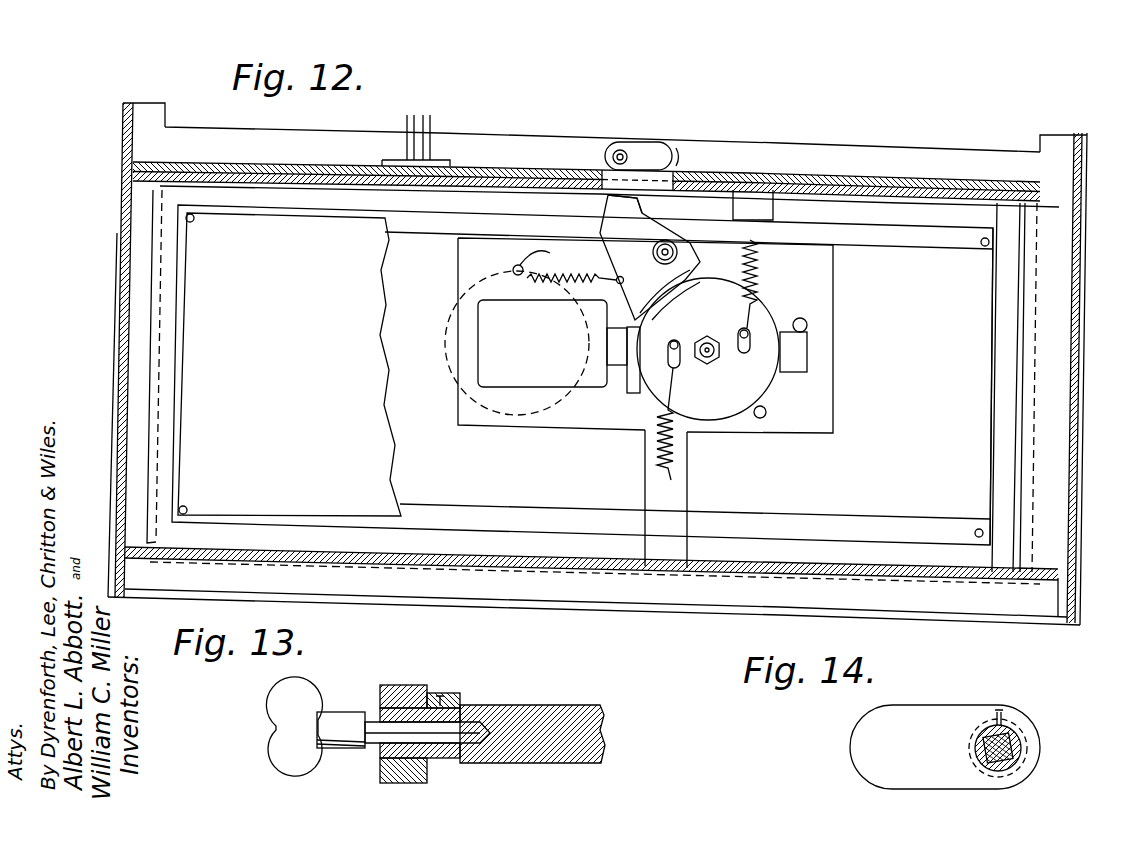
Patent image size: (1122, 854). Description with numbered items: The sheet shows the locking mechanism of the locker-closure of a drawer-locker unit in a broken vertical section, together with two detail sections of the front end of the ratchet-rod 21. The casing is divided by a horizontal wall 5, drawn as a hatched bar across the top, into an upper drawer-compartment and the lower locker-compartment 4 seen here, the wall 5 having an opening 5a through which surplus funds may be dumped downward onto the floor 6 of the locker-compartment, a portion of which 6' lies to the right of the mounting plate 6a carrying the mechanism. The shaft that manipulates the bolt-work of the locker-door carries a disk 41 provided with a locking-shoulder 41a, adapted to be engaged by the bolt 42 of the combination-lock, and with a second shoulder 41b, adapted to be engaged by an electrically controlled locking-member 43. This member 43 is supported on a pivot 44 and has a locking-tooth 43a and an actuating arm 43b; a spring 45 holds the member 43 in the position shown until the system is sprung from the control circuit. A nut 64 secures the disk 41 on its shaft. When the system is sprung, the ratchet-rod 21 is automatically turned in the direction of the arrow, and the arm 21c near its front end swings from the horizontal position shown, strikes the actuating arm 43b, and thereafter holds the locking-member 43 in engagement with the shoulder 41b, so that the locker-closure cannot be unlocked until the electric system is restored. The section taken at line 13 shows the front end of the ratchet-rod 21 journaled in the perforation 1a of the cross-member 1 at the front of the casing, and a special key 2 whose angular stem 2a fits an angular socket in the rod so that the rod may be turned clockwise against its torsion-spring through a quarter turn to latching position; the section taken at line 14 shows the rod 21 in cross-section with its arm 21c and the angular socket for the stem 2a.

In FIG. 13, the cross-member 1 is at (380, 688).
In FIG. 13, the perforation 1a is at (380, 772).
In FIG. 13, the special key 2 is at (277, 702).
In FIG. 13, the angular stem 2a is at (472, 738).
In FIG. 14, the angular stem 2a is at (1003, 770).
In FIG. 12, the locker-compartment 4 is at (128, 337).
In FIG. 12, the horizontal wall 5 is at (935, 185).
In FIG. 12, the opening 5a is at (122, 236).
In FIG. 12, the floor of the locker-compartment 6 is at (558, 396).
In FIG. 12, the panel portion 6' is at (942, 386).
In FIG. 12, the mounting plate 6a is at (490, 337).
In FIG. 12, the section line 13 is at (643, 105).
In FIG. 13, the section line 14 is at (450, 655).
In FIG. 12, the ratchet-rod 21 is at (625, 152).
In FIG. 13, the ratchet-rod 21 is at (563, 705).
In FIG. 14, the ratchet-rod 21 is at (1020, 737).
In FIG. 12, the arm 21c is at (670, 143).
In FIG. 14, the arm 21c is at (912, 718).
In FIG. 12, the disk 41 is at (723, 410).
In FIG. 12, the locking-shoulder 41a is at (637, 380).
In FIG. 12, the shoulder 41b is at (655, 312).
In FIG. 12, the bolt 42 is at (617, 345).
In FIG. 12, the locking-member 43 is at (627, 255).
In FIG. 12, the locking-tooth 43a is at (720, 284).
In FIG. 12, the actuating arm 43b is at (617, 212).
In FIG. 12, the pivot 44 is at (676, 248).
In FIG. 12, the spring 45 is at (548, 262).
In FIG. 12, the nut 64 is at (707, 364).